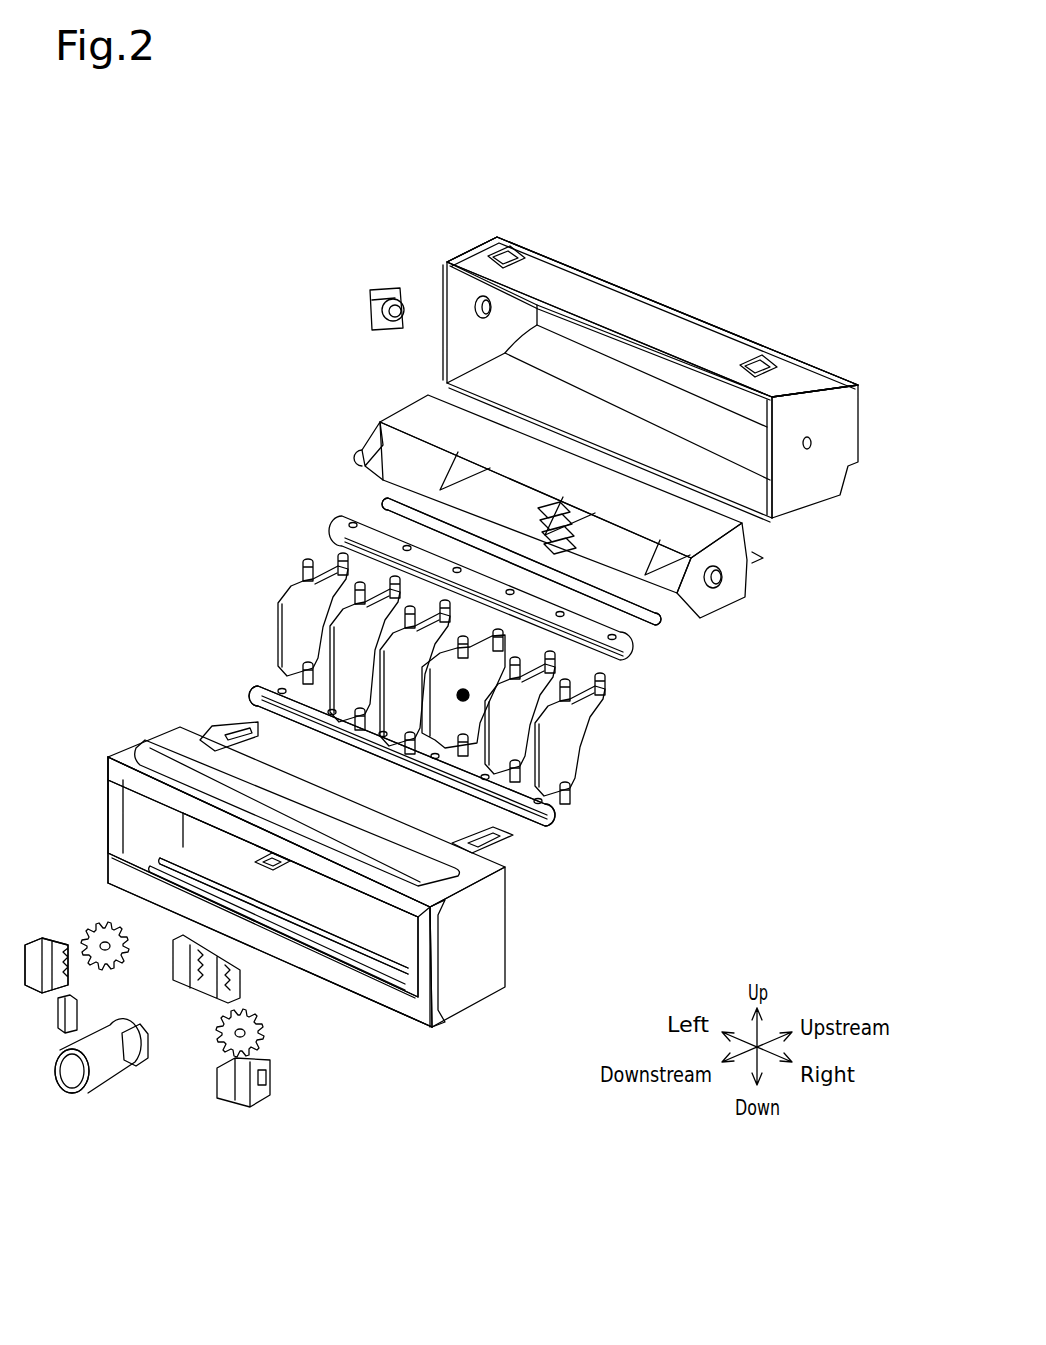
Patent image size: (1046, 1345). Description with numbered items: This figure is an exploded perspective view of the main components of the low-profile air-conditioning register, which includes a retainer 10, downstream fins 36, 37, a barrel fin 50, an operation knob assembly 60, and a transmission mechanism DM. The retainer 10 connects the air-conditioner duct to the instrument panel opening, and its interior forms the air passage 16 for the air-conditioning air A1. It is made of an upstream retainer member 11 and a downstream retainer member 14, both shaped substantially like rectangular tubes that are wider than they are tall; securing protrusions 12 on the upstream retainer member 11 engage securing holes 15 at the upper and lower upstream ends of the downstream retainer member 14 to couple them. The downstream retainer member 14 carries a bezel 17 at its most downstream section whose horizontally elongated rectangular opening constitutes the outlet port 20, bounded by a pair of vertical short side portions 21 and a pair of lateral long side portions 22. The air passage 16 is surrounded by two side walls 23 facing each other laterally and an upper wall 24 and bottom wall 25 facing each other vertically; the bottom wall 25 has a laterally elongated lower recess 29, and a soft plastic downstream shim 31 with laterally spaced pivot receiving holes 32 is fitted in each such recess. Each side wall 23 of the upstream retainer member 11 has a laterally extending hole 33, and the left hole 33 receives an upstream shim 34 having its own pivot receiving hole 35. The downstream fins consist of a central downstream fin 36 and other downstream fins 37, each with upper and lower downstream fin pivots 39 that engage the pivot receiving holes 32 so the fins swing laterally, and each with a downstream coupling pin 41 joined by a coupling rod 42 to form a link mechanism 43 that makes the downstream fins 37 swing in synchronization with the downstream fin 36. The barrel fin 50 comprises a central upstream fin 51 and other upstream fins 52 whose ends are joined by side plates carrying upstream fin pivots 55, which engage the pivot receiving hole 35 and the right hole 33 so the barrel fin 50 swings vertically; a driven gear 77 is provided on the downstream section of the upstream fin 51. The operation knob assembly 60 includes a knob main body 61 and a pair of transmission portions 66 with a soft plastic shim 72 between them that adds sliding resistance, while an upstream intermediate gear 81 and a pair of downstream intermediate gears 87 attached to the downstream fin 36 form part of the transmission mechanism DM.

The retainer 10 is at (511, 632).
The upstream retainer member 11 is at (852, 430).
The securing protrusions 12 is at (515, 266).
The downstream retainer member 14 is at (498, 930).
The securing holes 15 is at (236, 722).
The air passage 16 is at (637, 441).
The bezel 17 is at (408, 1012).
The outlet port 20 is at (284, 961).
The short side portions 21 is at (112, 838).
The long side portions 22 is at (128, 793).
The side walls 23 is at (458, 343).
The upper wall 24 is at (493, 242).
The bottom wall 25 is at (447, 385).
The lower recess 29 is at (380, 970).
The downstream shim 31 is at (630, 655).
The pivot receiving holes 32 is at (352, 523).
The hole 33 is at (478, 302).
The upstream shim 34 is at (372, 320).
The pivot receiving hole 35 is at (385, 305).
The downstream fin 36 is at (460, 700).
The downstream fins 37 is at (285, 615).
The downstream fin pivots 39 is at (303, 566).
The downstream coupling pin 41 is at (340, 558).
The coupling rod 42 is at (672, 627).
The link mechanism 43 is at (712, 728).
The barrel fin 50 is at (745, 598).
The upstream fin 51 is at (378, 470).
The upstream fins 52 is at (742, 524).
The upstream fin pivot 55 is at (368, 452).
The operation knob assembly 60 is at (91, 1111).
The knob main body 61 is at (105, 1085).
The transmission portions 66 is at (40, 993).
The shim 72 is at (58, 1015).
The driven gear 77 is at (556, 505).
The upstream intermediate gear 81 is at (180, 978).
The downstream intermediate gears 87 is at (108, 970).
The air-conditioning air A1 is at (707, 301).
The transmission mechanism DM is at (276, 1176).